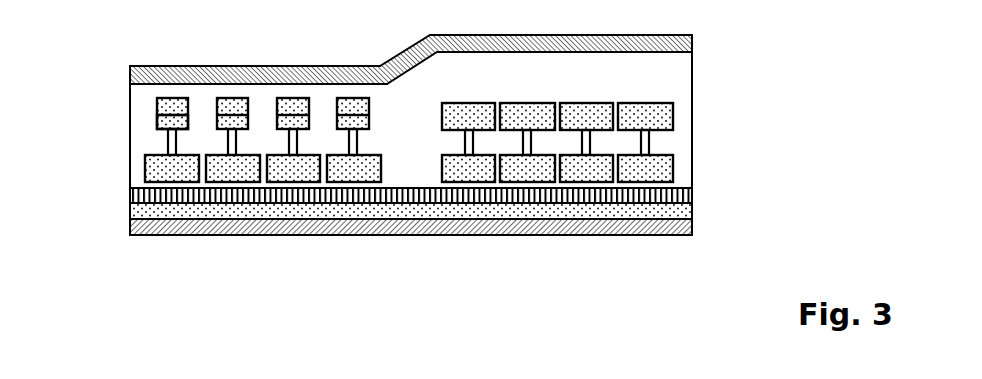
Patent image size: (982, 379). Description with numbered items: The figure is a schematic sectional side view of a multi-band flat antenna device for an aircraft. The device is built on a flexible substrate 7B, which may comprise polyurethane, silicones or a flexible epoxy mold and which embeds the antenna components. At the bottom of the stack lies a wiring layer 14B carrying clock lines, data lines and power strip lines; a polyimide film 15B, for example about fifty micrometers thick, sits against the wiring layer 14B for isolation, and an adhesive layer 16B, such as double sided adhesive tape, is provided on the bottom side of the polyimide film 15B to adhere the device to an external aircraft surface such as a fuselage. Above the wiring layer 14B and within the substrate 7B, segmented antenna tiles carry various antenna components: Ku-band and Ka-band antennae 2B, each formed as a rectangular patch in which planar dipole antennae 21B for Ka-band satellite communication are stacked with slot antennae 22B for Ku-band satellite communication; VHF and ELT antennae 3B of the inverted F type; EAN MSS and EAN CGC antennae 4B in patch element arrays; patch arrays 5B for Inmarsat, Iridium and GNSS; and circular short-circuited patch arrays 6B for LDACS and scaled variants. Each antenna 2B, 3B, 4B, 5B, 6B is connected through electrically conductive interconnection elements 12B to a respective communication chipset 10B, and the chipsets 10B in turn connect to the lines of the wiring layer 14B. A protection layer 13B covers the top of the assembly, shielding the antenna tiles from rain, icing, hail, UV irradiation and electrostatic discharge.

The Ku-band and Ka-band antennae 2B is at (173, 98).
The VHF, ELT-1, ELT-2 and ELT-3 antennae 3B is at (649, 103).
The EAN MSS and EAN CGC antennae 4B is at (474, 103).
The patch arrays 5B is at (532, 103).
The circular short-circuited patch arrays 6B is at (590, 103).
The substrate 7B is at (680, 98).
The communication chipsets 10B is at (145, 177).
The electrically conductive interconnection elements 12B is at (170, 138).
The protection layer 13B is at (693, 44).
The wiring layer 14B is at (680, 196).
The polyimide film 15B is at (680, 211).
The adhesive layer 16B is at (680, 228).
The planar dipole antennae 21B is at (157, 104).
The slot antennae 22B is at (157, 121).